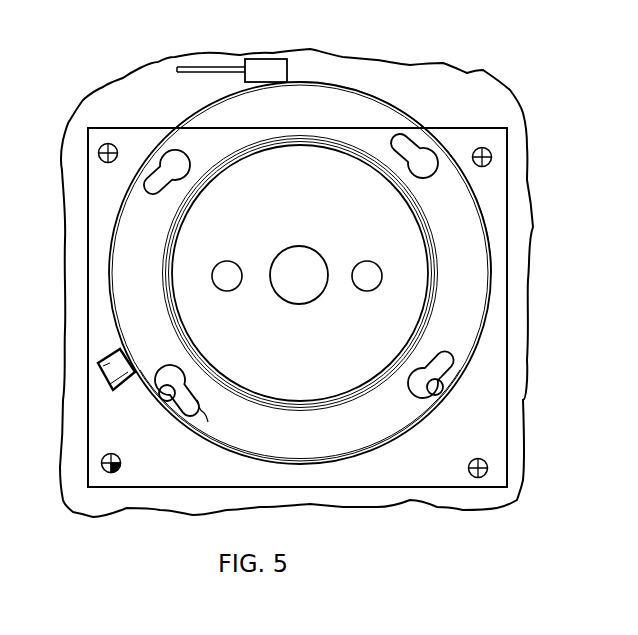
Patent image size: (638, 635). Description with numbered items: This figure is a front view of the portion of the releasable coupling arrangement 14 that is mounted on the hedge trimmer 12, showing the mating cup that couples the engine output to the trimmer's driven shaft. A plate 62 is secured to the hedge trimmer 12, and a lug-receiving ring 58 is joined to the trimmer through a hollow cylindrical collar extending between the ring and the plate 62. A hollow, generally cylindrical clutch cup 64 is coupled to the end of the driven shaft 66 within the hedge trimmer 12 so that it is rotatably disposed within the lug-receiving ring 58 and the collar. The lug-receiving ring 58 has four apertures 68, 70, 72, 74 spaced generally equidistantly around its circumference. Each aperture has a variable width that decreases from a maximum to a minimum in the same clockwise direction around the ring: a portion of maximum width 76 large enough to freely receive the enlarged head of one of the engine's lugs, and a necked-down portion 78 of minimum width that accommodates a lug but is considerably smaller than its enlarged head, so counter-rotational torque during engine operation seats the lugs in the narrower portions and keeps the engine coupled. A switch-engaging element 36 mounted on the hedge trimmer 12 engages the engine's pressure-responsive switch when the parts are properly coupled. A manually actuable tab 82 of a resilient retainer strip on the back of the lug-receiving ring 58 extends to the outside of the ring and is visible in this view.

The hedge trimmer 12 is at (144, 117).
The releasable coupling arrangement 14 is at (493, 259).
The switch-engaging element 36 is at (267, 66).
The lug-receiving ring 58 is at (363, 105).
The plate 62 is at (492, 177).
The clutch cup 64 is at (180, 261).
The driven shaft 66 is at (312, 285).
The aperture 68 is at (163, 399).
The aperture 70 is at (433, 393).
The aperture 72 is at (412, 148).
The aperture 74 is at (162, 173).
The portion of maximum width 76 is at (168, 367).
The necked-down portion 78 is at (212, 417).
The manually actuable tab 82 is at (98, 363).